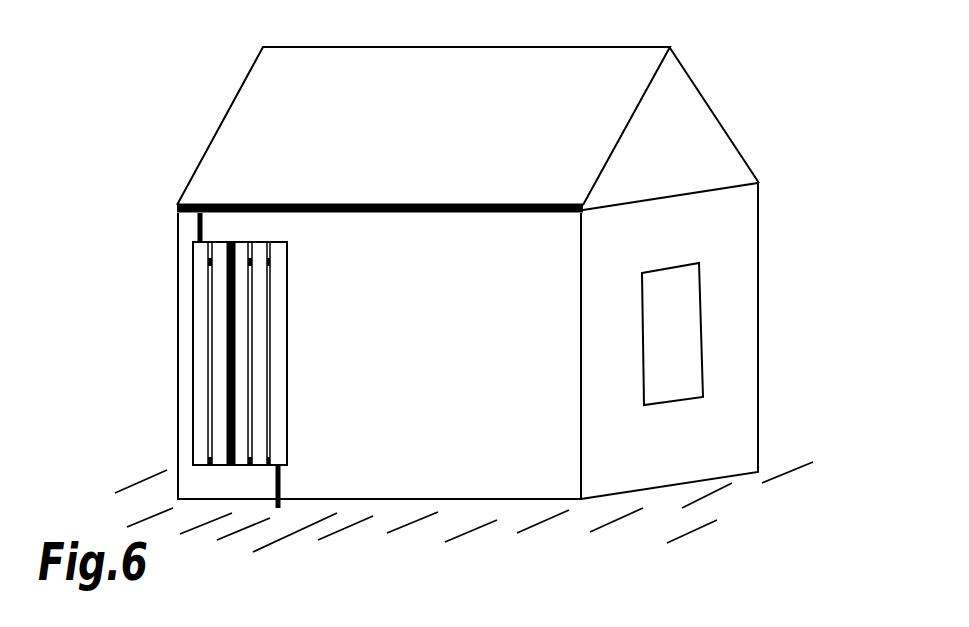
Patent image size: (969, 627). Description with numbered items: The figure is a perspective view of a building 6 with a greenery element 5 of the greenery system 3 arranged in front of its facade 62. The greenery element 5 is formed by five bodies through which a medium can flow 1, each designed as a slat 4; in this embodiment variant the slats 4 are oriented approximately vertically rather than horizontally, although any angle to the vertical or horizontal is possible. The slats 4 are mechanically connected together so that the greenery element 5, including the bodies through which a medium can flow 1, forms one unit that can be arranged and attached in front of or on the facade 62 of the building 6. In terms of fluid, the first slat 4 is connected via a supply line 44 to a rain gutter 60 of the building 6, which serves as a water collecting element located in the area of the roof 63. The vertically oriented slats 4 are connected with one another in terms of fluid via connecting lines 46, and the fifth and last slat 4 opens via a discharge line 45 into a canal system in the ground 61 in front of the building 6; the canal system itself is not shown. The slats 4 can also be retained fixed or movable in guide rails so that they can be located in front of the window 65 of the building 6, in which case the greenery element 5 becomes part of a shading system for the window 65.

The body through which a medium can flow 1 is at (202, 300).
The greenery system 3 is at (142, 225).
The slat 4 is at (192, 270).
The greenery element 5 is at (198, 367).
The building 6 is at (741, 96).
The supply line 44 is at (197, 227).
The discharge line 45 is at (283, 485).
The connecting line 46 is at (215, 467).
The rain gutter 60 is at (207, 206).
The ground 61 is at (143, 498).
The facade 62 is at (528, 475).
The roof 63 is at (237, 127).
The window 65 is at (690, 340).